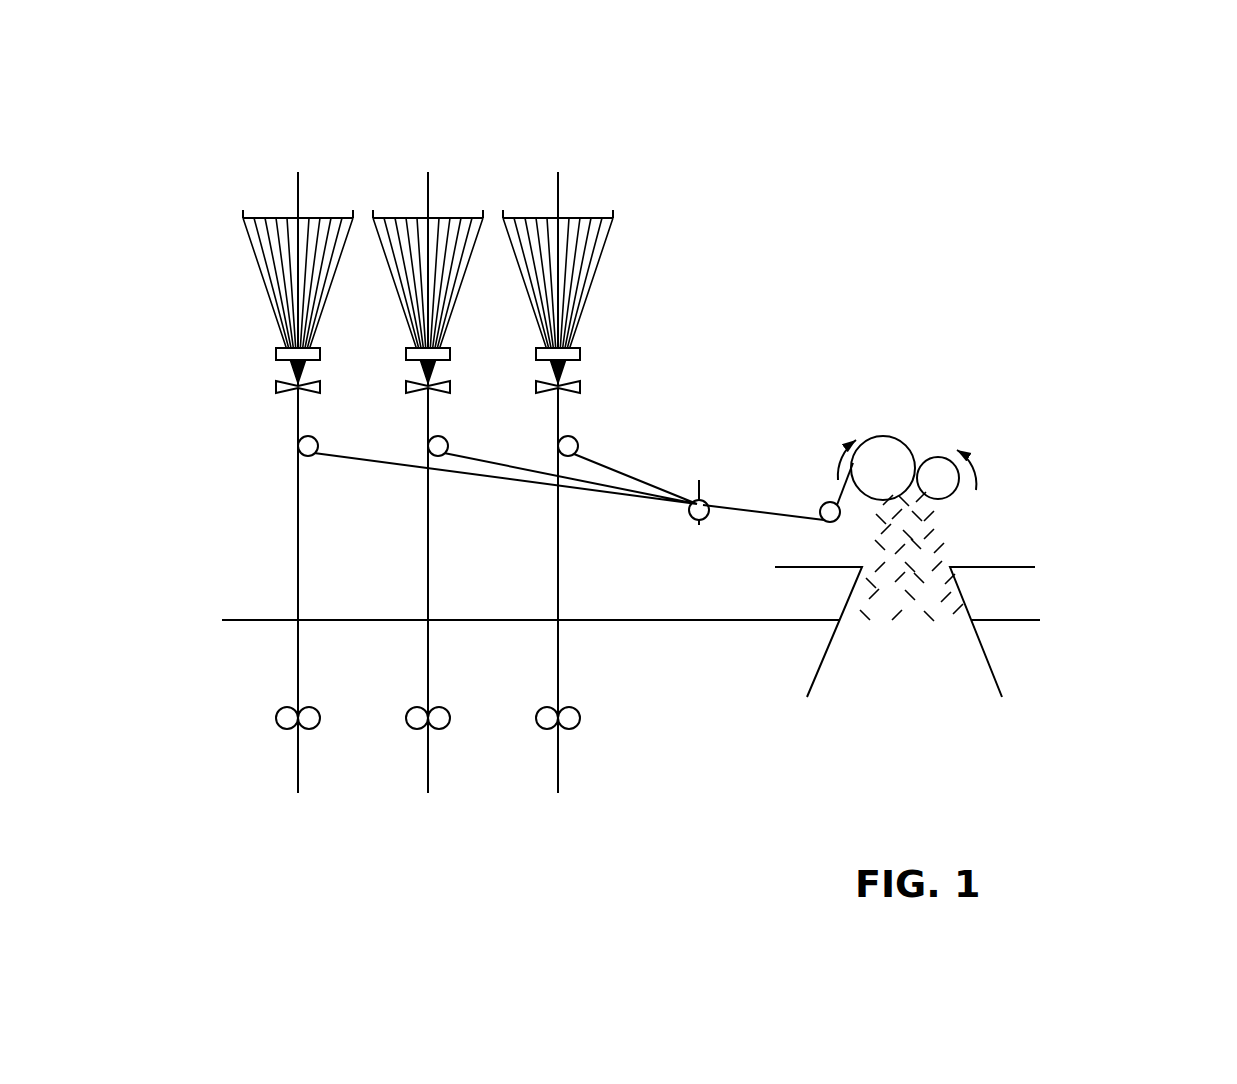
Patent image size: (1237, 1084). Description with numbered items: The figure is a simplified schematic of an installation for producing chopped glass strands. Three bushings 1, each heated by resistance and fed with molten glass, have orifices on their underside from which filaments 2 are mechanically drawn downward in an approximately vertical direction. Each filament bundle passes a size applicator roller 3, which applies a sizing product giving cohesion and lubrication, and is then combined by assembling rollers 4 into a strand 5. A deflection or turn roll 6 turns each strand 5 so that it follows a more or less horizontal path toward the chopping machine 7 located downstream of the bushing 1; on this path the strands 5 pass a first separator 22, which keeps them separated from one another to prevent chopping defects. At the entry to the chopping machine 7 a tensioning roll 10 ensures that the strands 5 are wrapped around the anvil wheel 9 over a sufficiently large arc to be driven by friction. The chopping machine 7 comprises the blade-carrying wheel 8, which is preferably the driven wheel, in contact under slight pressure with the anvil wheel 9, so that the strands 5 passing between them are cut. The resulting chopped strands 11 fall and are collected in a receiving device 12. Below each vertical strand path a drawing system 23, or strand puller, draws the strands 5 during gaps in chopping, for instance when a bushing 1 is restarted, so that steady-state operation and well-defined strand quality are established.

The bushing 1 is at (277, 205).
The filaments 2 is at (265, 285).
The size applicator roller 3 is at (272, 350).
The assembling rollers 4 is at (272, 388).
The strand 5 is at (296, 568).
The deflection or turn roll 6 is at (305, 455).
The chopping machine 7 is at (968, 403).
The blade-carrying wheel 8 is at (945, 477).
The anvil wheel 9 is at (884, 462).
The tensioning roll 10 is at (827, 502).
The chopped strands 11 is at (963, 540).
The receiving device 12 is at (962, 599).
The first separator 22 is at (699, 522).
The drawing system 23 is at (313, 730).